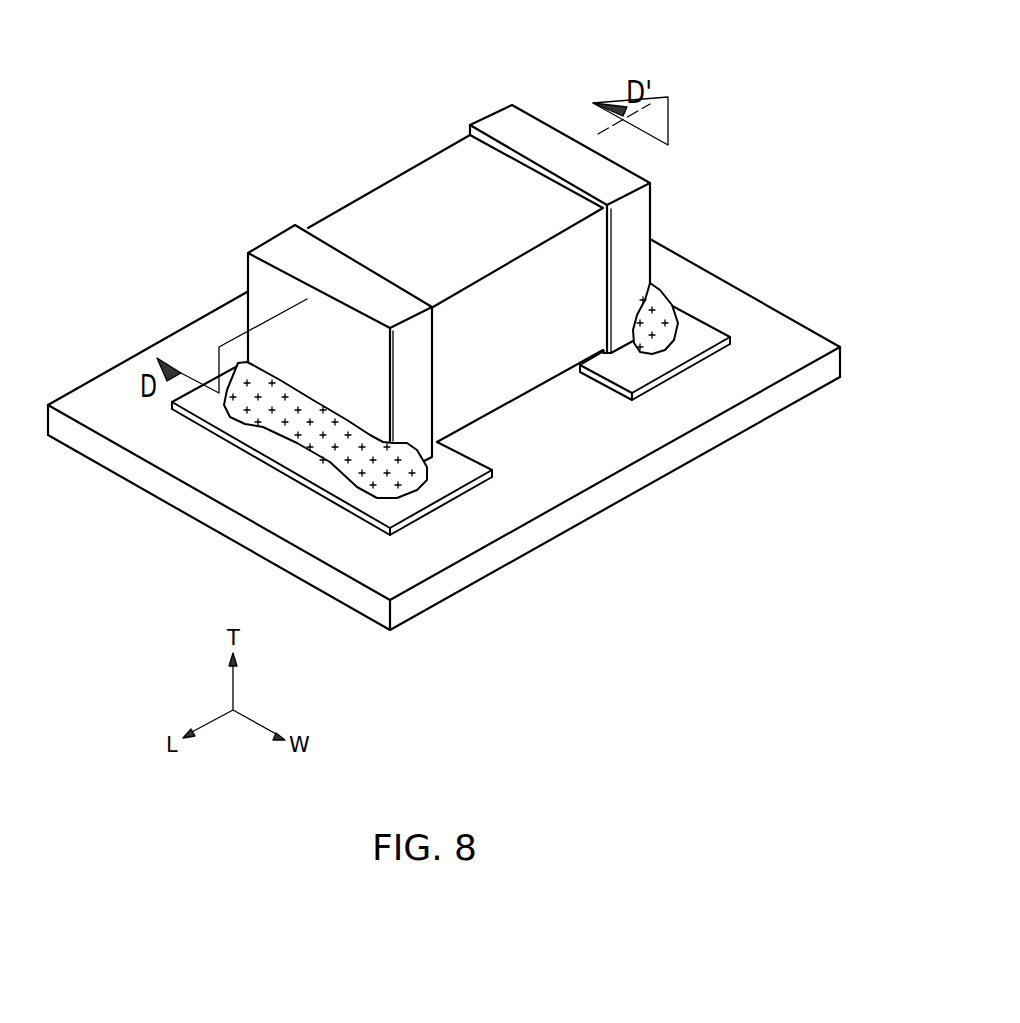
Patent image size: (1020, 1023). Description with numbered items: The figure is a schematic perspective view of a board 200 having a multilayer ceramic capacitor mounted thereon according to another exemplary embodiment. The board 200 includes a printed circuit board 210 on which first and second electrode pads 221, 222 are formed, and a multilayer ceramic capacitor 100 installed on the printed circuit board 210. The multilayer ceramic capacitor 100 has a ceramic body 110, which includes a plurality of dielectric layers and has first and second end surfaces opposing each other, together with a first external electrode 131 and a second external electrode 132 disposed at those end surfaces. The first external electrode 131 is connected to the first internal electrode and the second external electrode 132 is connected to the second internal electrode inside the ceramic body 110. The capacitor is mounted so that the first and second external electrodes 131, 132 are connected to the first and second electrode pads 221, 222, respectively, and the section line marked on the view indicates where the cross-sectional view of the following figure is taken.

The board having a multilayer ceramic capacitor mounted thereon 200 is at (444, 340).
The multilayer ceramic capacitor 100 is at (405, 242).
The ceramic body 110 is at (393, 192).
The first external electrode 131 is at (278, 242).
The second external electrode 132 is at (537, 125).
The printed circuit board 210 is at (588, 473).
The first electrode pad 221 is at (457, 477).
The second electrode pad 222 is at (645, 368).